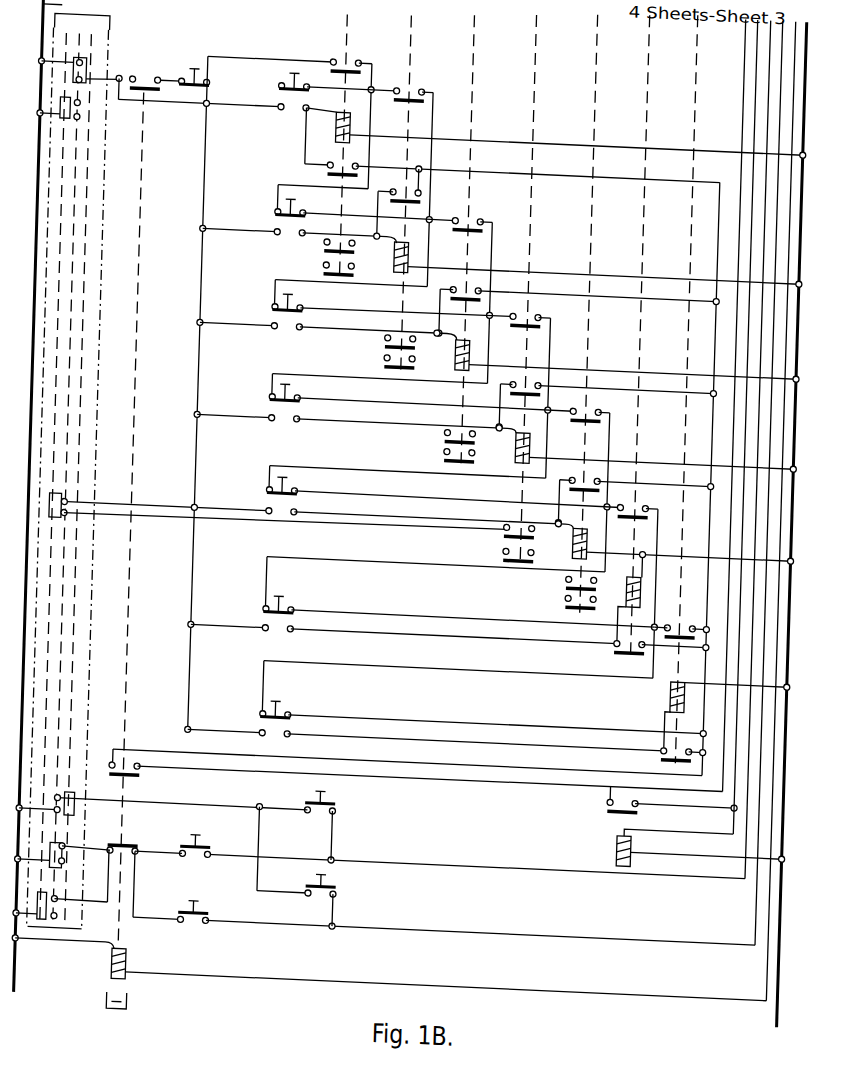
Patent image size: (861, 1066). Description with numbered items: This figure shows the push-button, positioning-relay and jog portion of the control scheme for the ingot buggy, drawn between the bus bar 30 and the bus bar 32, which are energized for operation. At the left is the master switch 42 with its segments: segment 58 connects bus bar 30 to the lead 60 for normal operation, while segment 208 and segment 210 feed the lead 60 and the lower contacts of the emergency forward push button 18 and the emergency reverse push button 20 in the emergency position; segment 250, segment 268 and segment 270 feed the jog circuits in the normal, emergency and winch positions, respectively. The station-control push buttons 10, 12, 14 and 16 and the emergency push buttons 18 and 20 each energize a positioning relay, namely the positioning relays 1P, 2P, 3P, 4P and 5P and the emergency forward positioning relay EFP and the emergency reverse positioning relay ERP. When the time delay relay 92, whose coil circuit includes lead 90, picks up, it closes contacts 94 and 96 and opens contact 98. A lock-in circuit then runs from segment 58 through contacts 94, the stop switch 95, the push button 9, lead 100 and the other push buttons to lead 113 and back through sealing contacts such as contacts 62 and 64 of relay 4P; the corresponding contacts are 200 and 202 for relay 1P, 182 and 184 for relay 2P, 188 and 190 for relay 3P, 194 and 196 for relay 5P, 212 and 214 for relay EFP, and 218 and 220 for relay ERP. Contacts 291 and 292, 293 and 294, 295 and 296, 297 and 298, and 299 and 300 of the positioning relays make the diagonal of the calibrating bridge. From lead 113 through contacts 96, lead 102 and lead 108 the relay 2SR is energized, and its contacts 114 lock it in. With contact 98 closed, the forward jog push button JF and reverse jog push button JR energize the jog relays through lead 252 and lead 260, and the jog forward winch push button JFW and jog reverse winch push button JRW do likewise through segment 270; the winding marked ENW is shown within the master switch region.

The bus bar 30 is at (64, 8).
The bus bar 32 is at (799, 40).
The master switch 42 is at (78, 200).
The segment of controller switch 58 is at (78, 81).
The lead 60 is at (194, 321).
The contact of positioning relay 4P 62 is at (519, 380).
The contact of positioning relay 4P 64 is at (526, 316).
The push button 9 is at (268, 91).
The station-control push button 10 is at (266, 221).
The station-control push button 12 is at (266, 314).
The station-control push button 14 is at (267, 405).
The station-control push button 16 is at (269, 494).
The emergency forward push button 18 is at (267, 615).
The emergency reverse push button 20 is at (258, 720).
The lead 90 is at (628, 986).
The time delay relay 92 is at (136, 372).
The contact of time delay relay 94 is at (130, 99).
The stop switch 95 is at (195, 66).
The contact of time delay relay 96 is at (140, 789).
The contact of time delay relay 98 is at (138, 858).
The lead 100 is at (364, 148).
The lead 102 is at (731, 768).
The lead 108 is at (741, 786).
The lead 113 is at (707, 513).
The contacts of relay 2SR 114 is at (615, 804).
The contact of positioning relay 2P 182 is at (398, 185).
The contact of positioning relay 2P 184 is at (400, 106).
The contact of positioning relay 3P 188 is at (459, 284).
The contact of positioning relay 3P 190 is at (457, 239).
The contact of positioning relay 5P 194 is at (574, 474).
The contact of positioning relay 5P 196 is at (577, 430).
The contact of positioning relay 1P 200 is at (322, 179).
The contact of positioning relay 1P 202 is at (334, 58).
The segment of master switch 208 is at (64, 123).
The segment of master switch 210 is at (277, 530).
The contact of relay EFP 212 is at (646, 645).
The contact of relay EFP 214 is at (643, 502).
The contact of relay ERP 218 is at (667, 749).
The contact of relay ERP 220 is at (683, 616).
The segment of master switch 250 is at (43, 865).
The lead 252 is at (753, 829).
The lead 260 is at (767, 897).
The segment of master switch 268 is at (56, 937).
The segment of master switch 270 is at (44, 812).
The contact of positioning relay 1P 291 is at (316, 279).
The contact of positioning relay 1P 292 is at (316, 256).
The contact of positioning relay 2P 293 is at (379, 369).
The contact of positioning relay 2P 294 is at (380, 349).
The contact of positioning relay 3P 295 is at (442, 460).
The contact of positioning relay 3P 296 is at (442, 441).
The contact of positioning relay 4P 297 is at (503, 557).
The contact of positioning relay 4P 298 is at (503, 533).
The contact of positioning relay 5P 299 is at (567, 602).
The contact of positioning relay 5P 300 is at (568, 583).
The positioning relay 1P is at (324, 131).
The positioning relay 2P is at (386, 262).
The positioning relay 3P is at (450, 352).
The positioning relay 4P is at (513, 446).
The positioning relay 5P is at (573, 542).
The emergency forward positioning relay EFP is at (636, 417).
The emergency reverse positioning relay ERP is at (674, 693).
The relay 2SR is at (641, 851).
The forward jog push button JF is at (200, 839).
The reverse jog push button JR is at (200, 905).
The jog forward winch push button JFW is at (333, 822).
The jog reverse winch push button JRW is at (334, 897).
The control unit ENW is at (82, 23).